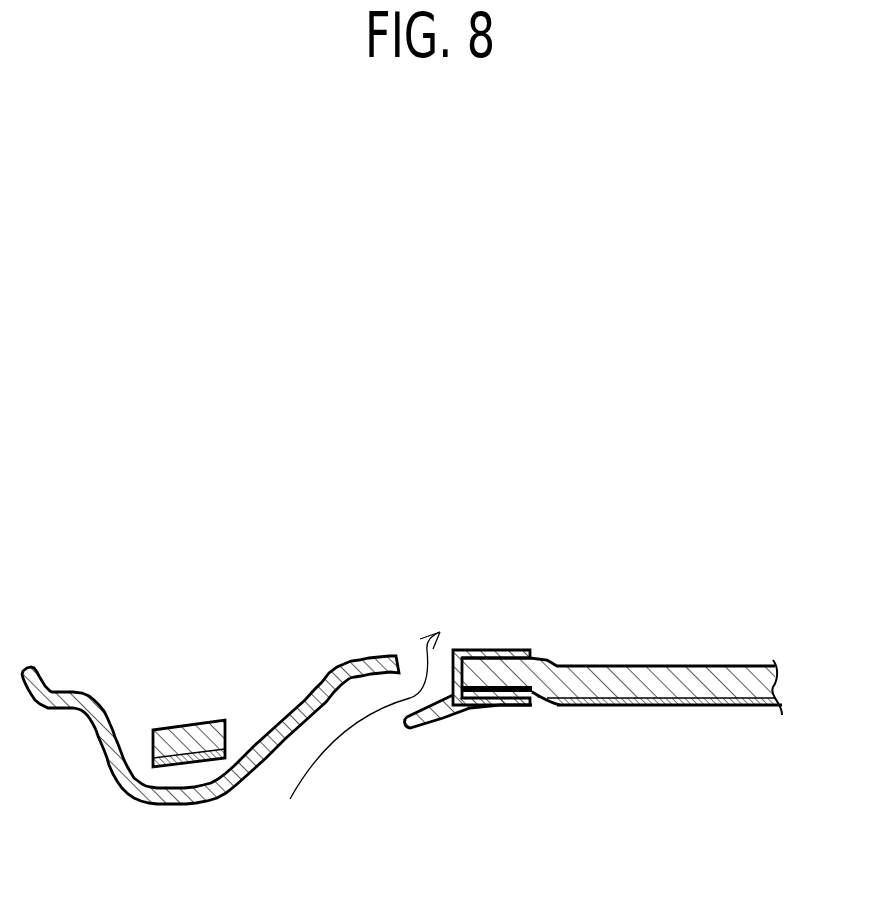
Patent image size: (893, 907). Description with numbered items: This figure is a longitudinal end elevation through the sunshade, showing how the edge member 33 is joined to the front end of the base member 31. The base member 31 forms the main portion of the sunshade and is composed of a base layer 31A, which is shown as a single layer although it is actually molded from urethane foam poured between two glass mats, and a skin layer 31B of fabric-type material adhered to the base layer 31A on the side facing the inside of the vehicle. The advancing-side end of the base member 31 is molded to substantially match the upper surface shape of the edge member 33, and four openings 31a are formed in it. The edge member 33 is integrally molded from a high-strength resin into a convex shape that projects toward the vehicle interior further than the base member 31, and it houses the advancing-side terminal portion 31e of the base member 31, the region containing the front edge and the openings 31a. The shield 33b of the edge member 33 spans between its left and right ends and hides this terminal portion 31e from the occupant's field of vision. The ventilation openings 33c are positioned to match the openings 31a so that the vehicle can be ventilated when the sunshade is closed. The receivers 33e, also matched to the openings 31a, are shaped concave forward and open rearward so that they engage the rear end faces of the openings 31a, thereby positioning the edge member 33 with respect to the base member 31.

The base member 31 is at (776, 688).
The base layer 31A is at (658, 684).
The skin layer 31B is at (660, 700).
The openings 31a is at (456, 676).
The advancing-side terminal portion 31e is at (190, 740).
The edge member 33 is at (194, 804).
The shield 33b is at (107, 757).
The ventilation openings 33c is at (400, 661).
The receivers 33e is at (498, 652).